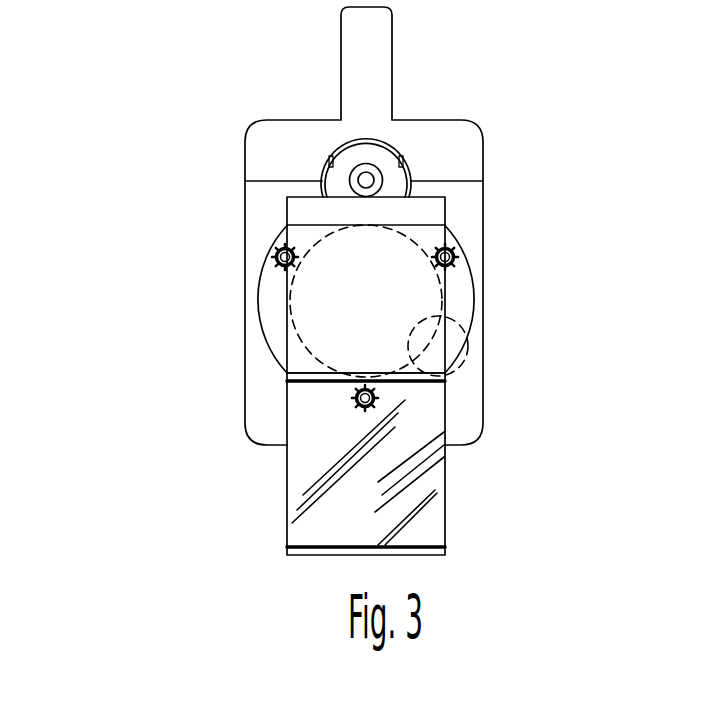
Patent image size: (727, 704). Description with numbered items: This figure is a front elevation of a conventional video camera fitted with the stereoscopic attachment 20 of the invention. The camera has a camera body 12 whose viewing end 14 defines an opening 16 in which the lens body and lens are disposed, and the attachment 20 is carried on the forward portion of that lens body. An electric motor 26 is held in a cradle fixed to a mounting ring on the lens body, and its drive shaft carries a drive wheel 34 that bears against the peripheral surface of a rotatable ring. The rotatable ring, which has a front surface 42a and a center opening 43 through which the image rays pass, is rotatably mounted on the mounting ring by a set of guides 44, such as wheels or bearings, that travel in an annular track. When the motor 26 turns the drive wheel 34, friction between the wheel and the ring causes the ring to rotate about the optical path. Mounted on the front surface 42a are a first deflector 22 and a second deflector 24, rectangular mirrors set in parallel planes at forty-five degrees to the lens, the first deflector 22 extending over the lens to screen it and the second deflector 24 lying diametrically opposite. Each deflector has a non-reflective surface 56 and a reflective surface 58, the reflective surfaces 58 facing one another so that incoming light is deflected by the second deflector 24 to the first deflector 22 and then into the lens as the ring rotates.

The camera body 12 is at (243, 140).
The viewing end 14 is at (257, 215).
The opening 16 is at (280, 316).
The attachment 20 is at (461, 191).
The first deflector 22 is at (290, 225).
The second deflector 24 is at (287, 525).
The electric motor 26 is at (337, 157).
The drive wheel 34 is at (368, 167).
The front surface 42a is at (278, 347).
The center opening 43 is at (468, 338).
The guides 44 is at (281, 254).
The non-reflective surface 56 is at (379, 315).
The reflective surface 58 is at (380, 482).